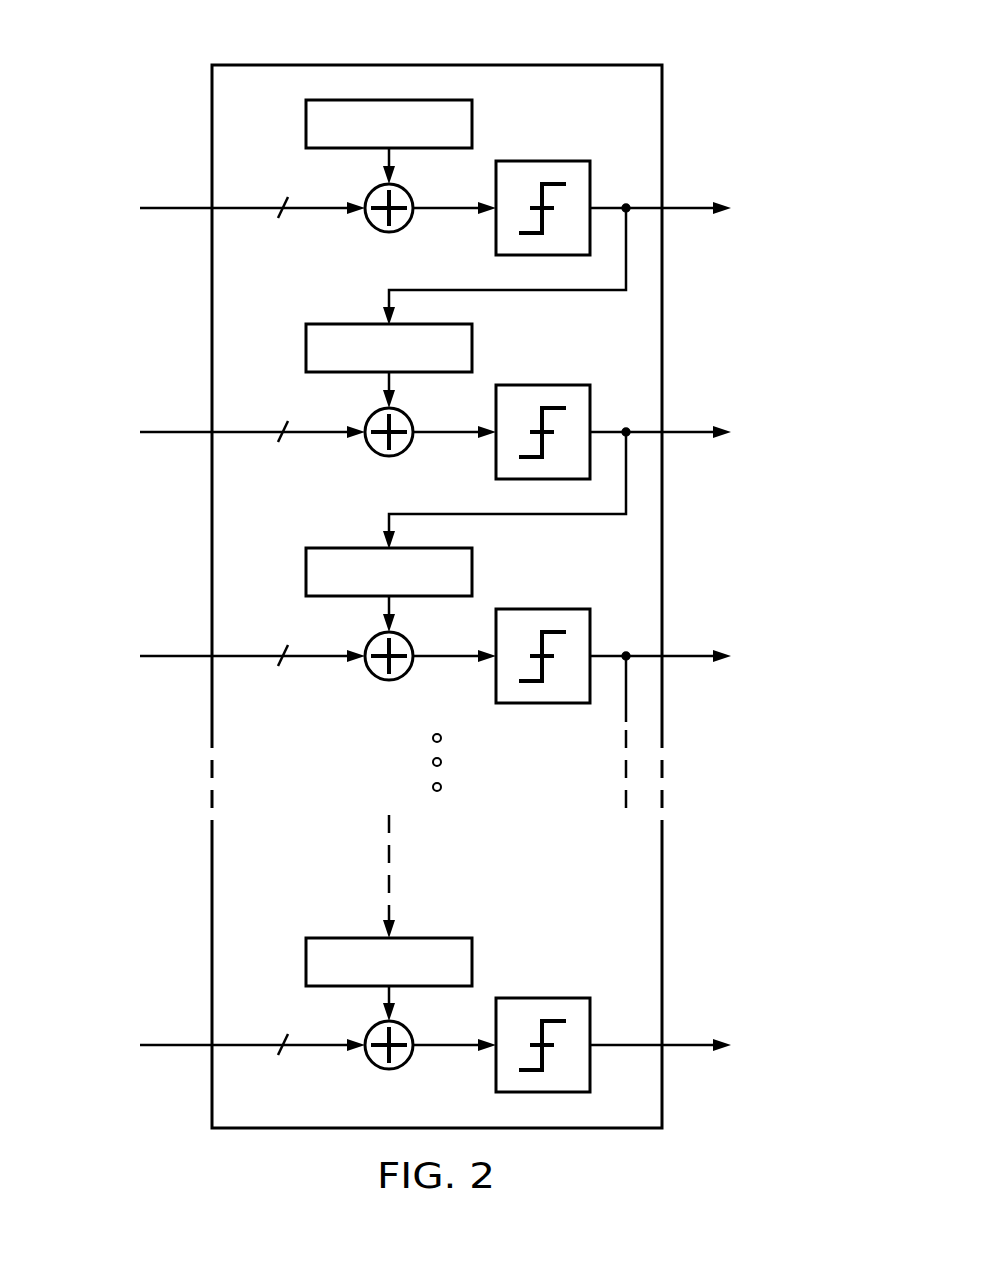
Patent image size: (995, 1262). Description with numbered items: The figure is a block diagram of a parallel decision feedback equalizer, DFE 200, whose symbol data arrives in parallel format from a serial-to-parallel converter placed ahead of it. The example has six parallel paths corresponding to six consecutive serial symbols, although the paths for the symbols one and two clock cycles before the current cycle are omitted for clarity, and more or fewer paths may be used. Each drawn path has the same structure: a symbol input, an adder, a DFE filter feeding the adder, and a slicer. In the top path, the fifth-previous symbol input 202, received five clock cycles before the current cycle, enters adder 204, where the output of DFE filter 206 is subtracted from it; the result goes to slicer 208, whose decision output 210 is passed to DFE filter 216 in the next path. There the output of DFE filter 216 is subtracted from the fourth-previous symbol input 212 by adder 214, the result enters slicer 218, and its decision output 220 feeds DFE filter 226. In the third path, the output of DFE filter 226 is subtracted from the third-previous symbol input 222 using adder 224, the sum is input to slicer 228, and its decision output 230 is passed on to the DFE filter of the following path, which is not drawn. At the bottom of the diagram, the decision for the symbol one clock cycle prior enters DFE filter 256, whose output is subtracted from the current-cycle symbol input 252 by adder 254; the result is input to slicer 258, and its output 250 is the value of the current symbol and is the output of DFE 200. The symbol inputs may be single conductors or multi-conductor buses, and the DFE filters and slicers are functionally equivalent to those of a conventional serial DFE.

The parallel DFE 200 is at (348, 58).
The signal ffe_out_5 202 is at (176, 206).
The adder 204 is at (373, 227).
The DFE filter 206 is at (306, 126).
The slicer 208 is at (555, 161).
The output of slicer 208 210 is at (697, 206).
The signal ffe_out_4 212 is at (176, 430).
The adder 214 is at (373, 451).
The DFE filter 216 is at (306, 350).
The slicer 218 is at (555, 385).
The output of slicer 218 220 is at (697, 430).
The signal ffe_out_3 222 is at (177, 659).
The adder 224 is at (373, 675).
The DFE filter 226 is at (306, 575).
The slicer 228 is at (555, 609).
The output of slicer 228 230 is at (697, 659).
The output of slicer 258 250 is at (697, 1048).
The signal ffe_out_0 252 is at (177, 1048).
The adder 254 is at (373, 1064).
The DFE filter 256 is at (306, 961).
The slicer 258 is at (555, 998).